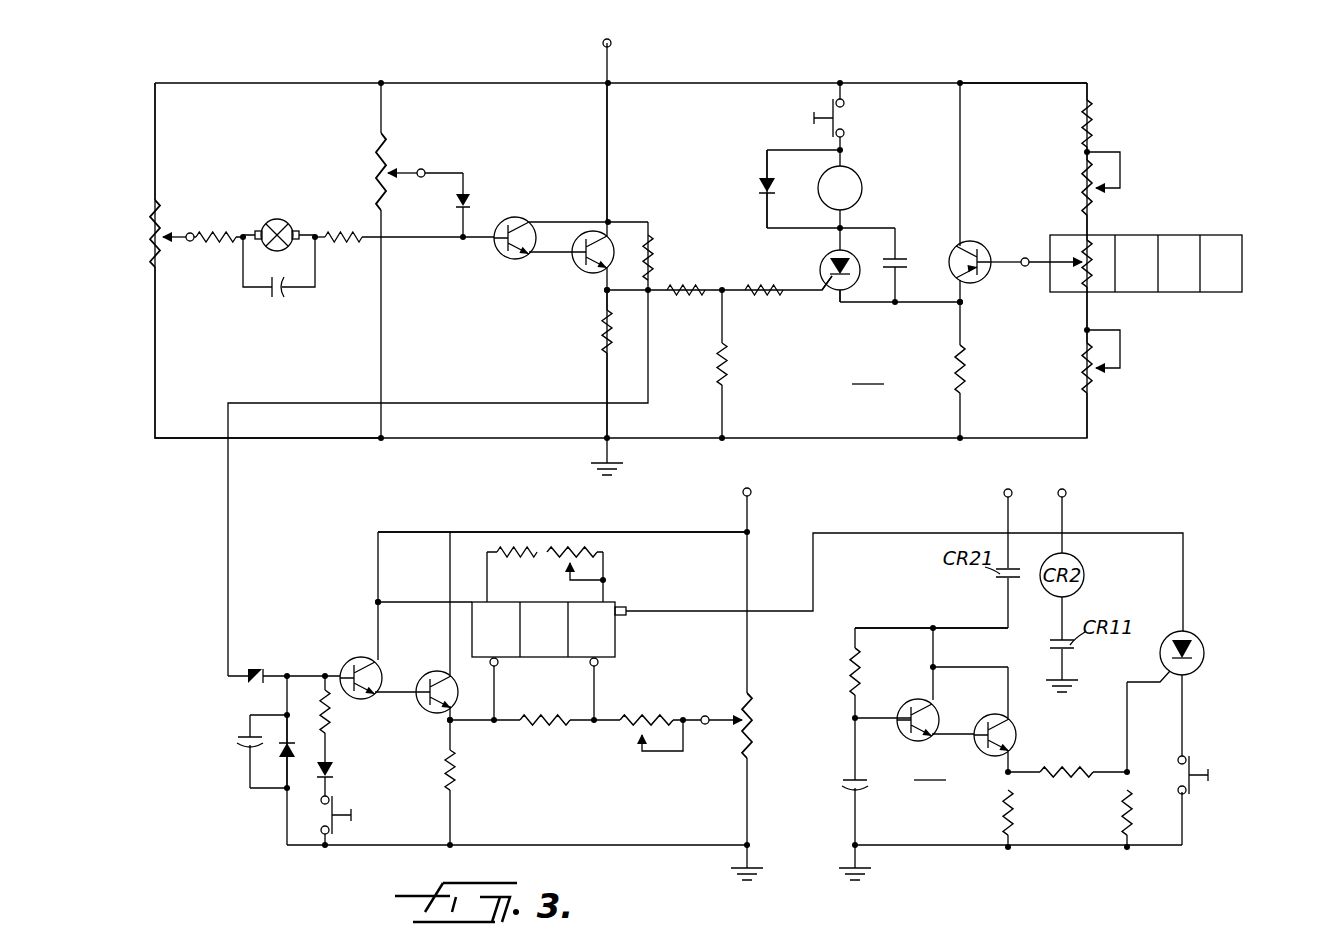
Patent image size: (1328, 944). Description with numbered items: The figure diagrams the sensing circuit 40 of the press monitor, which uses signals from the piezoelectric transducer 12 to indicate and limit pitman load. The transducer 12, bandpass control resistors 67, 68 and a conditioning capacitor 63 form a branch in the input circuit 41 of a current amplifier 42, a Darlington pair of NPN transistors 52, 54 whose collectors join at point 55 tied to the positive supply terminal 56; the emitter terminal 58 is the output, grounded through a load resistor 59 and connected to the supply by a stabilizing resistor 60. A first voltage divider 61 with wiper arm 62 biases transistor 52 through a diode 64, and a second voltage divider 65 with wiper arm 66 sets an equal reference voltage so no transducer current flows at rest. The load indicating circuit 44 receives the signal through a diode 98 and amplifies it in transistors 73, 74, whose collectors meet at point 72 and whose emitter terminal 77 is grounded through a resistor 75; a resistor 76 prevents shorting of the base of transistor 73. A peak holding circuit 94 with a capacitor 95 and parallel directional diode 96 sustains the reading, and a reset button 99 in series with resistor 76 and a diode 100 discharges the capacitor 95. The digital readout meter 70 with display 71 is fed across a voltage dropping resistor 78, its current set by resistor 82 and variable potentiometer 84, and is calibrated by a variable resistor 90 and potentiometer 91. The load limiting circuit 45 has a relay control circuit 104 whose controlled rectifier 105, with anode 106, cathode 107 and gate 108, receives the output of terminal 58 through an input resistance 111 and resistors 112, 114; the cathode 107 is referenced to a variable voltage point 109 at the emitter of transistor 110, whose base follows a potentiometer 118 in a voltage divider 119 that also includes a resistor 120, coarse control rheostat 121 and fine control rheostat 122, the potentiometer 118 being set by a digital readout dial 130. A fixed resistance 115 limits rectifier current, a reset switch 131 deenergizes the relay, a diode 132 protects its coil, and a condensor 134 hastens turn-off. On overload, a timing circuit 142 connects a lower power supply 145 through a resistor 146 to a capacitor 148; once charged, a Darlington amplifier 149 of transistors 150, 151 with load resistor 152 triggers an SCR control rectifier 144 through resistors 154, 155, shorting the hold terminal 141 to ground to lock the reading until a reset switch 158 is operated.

The sensing circuit 40 is at (322, 75).
The load limiting circuit 45 is at (997, 110).
The positive DC supply terminal 56 is at (603, 43).
The second voltage divider 65 is at (150, 235).
The wiper arm 66 is at (188, 232).
The bandpass control resistor 67 is at (218, 248).
The transducer 12 is at (278, 216).
The conditioning capacitor 63 is at (268, 292).
The input circuit 41 is at (290, 306).
The bandpass control resistor 68 is at (346, 248).
The first voltage divider 61 is at (378, 142).
The wiper arm 62 is at (422, 168).
The diode 64 is at (468, 200).
The first transistor 52 is at (497, 258).
The current amplifier 42 is at (542, 283).
The second transistor 54 is at (585, 230).
The collector connection 55 is at (610, 222).
The stabilizing resistor 60 is at (655, 245).
The emitter terminal 58 is at (603, 291).
The load resistor 59 is at (603, 340).
The resistor 112 is at (670, 300).
The input resistance 111 is at (772, 300).
The resistor 114 is at (728, 372).
The relay control circuit 104 is at (868, 373).
The reset switch 131 is at (850, 110).
The diode 132 is at (762, 186).
The anode terminal 106 is at (855, 230).
The controlled rectifier 105 is at (826, 258).
The gate terminal 108 is at (824, 286).
The cathode terminal 107 is at (840, 300).
The condensor 134 is at (905, 259).
The transistor 110 is at (976, 240).
The variable voltage point 109 is at (962, 305).
The fixed resistance 115 is at (965, 370).
The voltage divider 119 is at (1108, 97).
The resistor 120 is at (1093, 120).
The coarse control rheostat 121 is at (1095, 205).
The potentiometer 118 is at (1080, 245).
The digital readout dial 130 is at (1240, 238).
The fine control rheostat 122 is at (1095, 385).
The load indicating circuit 44 is at (440, 555).
The common point 72 is at (376, 602).
The diode 98 is at (256, 668).
The first transistor 73 is at (358, 657).
The second transistor 74 is at (432, 672).
The resistor 76 is at (328, 715).
The emitter terminal 77 is at (447, 721).
The diode 100 is at (333, 770).
The reset button 99 is at (331, 838).
The capacitor 95 is at (245, 738).
The directional diode 96 is at (280, 752).
The peak holding circuit 94 is at (240, 785).
The resistor 75 is at (455, 770).
The resistor 82 is at (512, 545).
The variable potentiometer 84 is at (580, 545).
The digital readout meter 70 is at (622, 650).
The display 71 is at (530, 605).
The meter terminal 141 is at (630, 610).
The voltage dropping resistor 78 is at (540, 728).
The variable resistor 90 is at (645, 715).
The potentiometer 91 is at (752, 720).
The power supply 145 is at (1004, 493).
The timing circuit 142 is at (905, 622).
The resistor 146 is at (850, 668).
The capacitor 148 is at (848, 790).
The first transistor 150 is at (915, 698).
The second transistor 151 is at (990, 715).
The Darlington amplifier 149 is at (930, 768).
The load resistor 152 is at (1003, 808).
The resistor 154 is at (1070, 765).
The resistor 155 is at (1123, 808).
The control rectifier 144 is at (1205, 643).
The reset switch 158 is at (1192, 770).